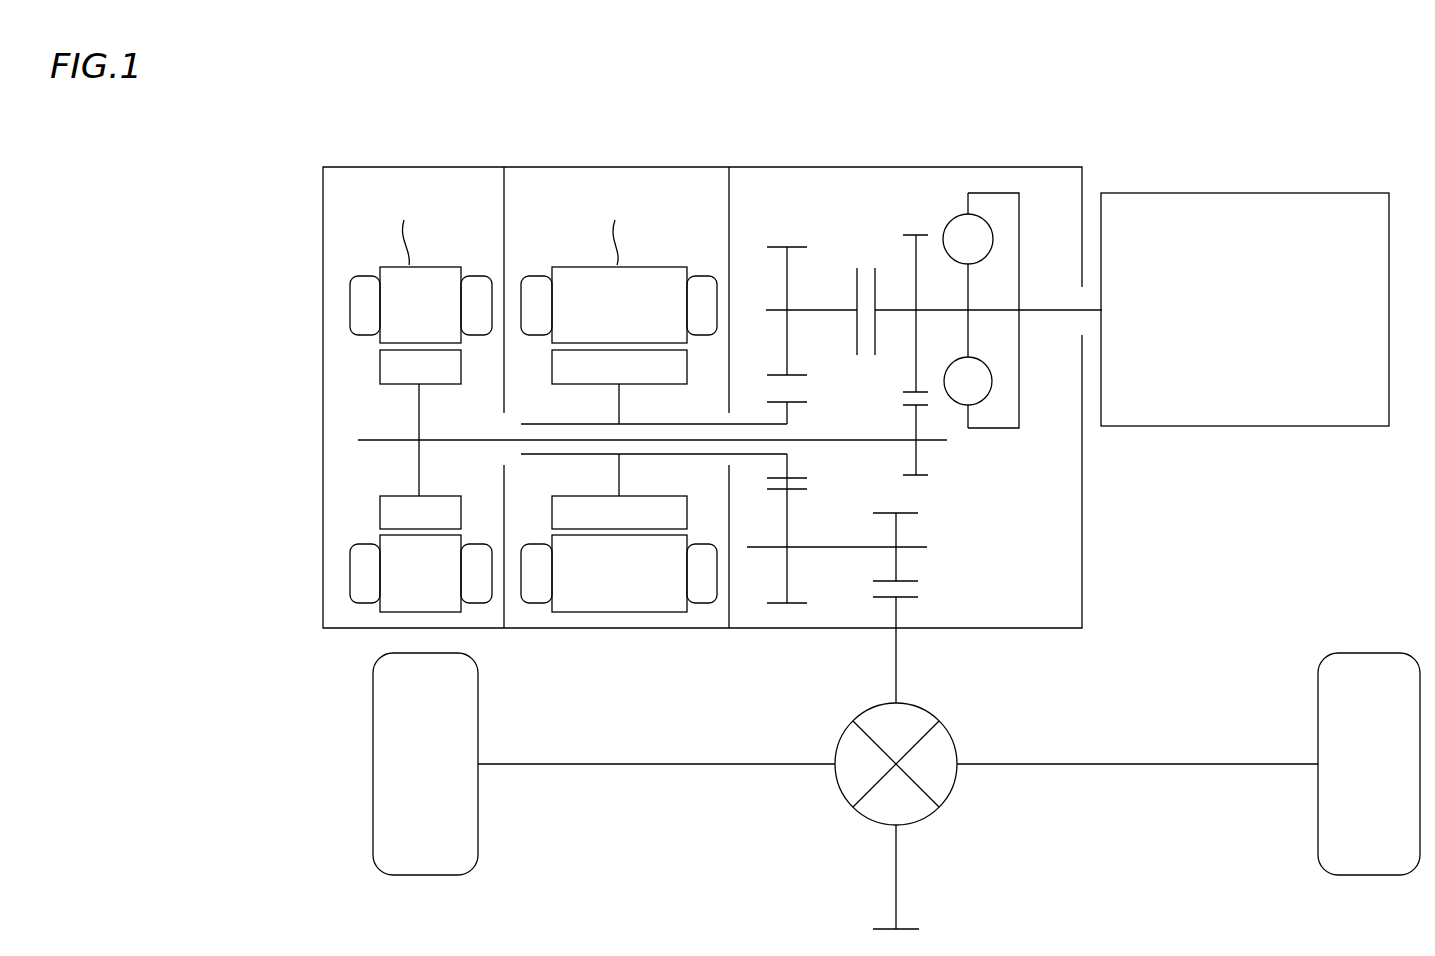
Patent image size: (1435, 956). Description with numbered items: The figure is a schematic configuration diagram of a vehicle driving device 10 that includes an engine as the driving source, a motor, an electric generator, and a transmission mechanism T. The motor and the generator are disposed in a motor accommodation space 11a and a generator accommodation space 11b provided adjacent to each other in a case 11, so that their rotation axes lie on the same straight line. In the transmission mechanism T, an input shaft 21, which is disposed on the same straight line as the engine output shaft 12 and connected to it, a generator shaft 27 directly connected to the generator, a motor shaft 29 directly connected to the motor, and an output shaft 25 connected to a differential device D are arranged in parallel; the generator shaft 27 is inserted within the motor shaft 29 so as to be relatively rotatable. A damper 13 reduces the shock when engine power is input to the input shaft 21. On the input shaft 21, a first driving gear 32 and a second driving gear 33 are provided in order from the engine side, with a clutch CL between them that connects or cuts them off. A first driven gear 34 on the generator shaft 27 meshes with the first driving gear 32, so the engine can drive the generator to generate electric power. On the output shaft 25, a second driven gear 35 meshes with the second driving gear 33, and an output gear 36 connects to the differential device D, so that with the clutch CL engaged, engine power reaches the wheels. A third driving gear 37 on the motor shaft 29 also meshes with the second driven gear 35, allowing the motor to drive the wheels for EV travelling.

The vehicle driving device 10 is at (1283, 97).
The case 11 is at (793, 167).
The motor accommodation space 11a is at (678, 178).
The generator accommodation space 11b is at (465, 178).
The engine output shaft 12 is at (1087, 306).
The damper 13 is at (993, 203).
The input shaft 21 is at (970, 365).
The output shaft 25 is at (912, 551).
The generator shaft 27 is at (838, 442).
The motor shaft 29 is at (748, 423).
The first driving gear 32 is at (918, 285).
The second driving gear 33 is at (787, 283).
The first driven gear 34 is at (918, 458).
The second driven gear 35 is at (776, 605).
The output gear 36 is at (912, 583).
The third driving gear 37 is at (800, 404).
The clutch CL is at (868, 265).
The transmission mechanism T is at (972, 166).
The differential device D is at (955, 787).